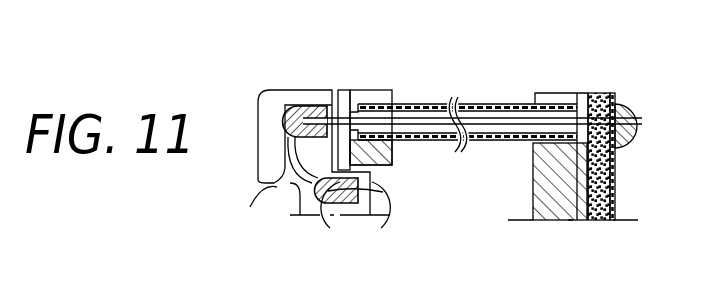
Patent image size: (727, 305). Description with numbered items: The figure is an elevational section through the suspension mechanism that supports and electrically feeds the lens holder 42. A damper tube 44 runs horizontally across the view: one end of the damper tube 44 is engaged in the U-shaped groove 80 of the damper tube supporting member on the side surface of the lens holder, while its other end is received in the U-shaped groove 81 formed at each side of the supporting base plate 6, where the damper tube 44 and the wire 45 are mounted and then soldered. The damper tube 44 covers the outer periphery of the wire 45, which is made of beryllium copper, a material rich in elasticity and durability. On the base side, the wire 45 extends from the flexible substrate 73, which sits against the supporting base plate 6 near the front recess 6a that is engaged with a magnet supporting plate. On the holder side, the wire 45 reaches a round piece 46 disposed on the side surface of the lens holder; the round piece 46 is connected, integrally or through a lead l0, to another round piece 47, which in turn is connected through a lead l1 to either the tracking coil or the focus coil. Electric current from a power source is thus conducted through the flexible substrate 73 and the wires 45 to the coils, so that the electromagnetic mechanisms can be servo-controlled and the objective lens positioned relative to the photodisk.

The round piece 46 is at (300, 110).
The round piece 47 is at (326, 204).
The U-shaped groove 80 is at (372, 100).
The damper tube 44 is at (490, 103).
The wire 45 is at (477, 143).
The U-shaped groove 81 is at (552, 93).
The supporting base plate 6 is at (558, 210).
The front recess 6a is at (533, 168).
The lens holder 42 is at (598, 207).
The flexible substrate 73 is at (615, 172).
The lead l0 is at (250, 209).
The lead l1 is at (375, 213).